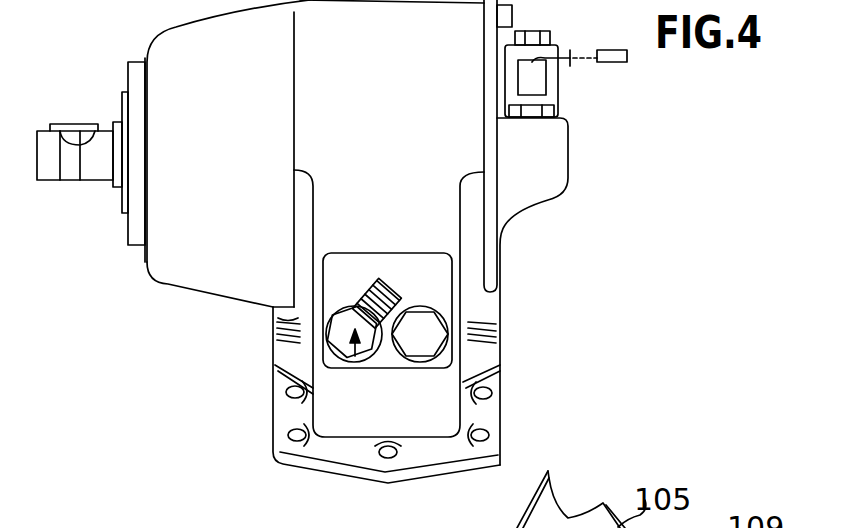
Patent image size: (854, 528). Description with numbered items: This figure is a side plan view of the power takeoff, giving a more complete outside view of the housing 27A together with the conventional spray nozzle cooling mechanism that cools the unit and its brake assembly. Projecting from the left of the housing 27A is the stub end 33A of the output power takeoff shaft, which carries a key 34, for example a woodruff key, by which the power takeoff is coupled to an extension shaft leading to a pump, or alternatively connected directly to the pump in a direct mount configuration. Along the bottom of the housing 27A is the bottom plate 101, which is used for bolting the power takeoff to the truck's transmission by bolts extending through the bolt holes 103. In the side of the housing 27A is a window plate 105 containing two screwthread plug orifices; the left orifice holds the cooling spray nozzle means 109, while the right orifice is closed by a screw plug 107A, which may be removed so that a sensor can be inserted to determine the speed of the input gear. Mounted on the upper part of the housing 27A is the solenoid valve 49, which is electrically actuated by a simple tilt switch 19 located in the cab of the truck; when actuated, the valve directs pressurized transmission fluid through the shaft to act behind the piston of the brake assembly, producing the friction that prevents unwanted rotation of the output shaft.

The tilt switch 19 is at (628, 62).
The housing 27A is at (420, 112).
The stub end 33A is at (50, 168).
The key 34 is at (73, 125).
The solenoid valve 49 is at (553, 93).
The bottom plate 101 is at (490, 413).
The bolt holes 103 is at (293, 393).
The window plate 105 is at (355, 262).
The screw plug 107A is at (435, 330).
The cooling spray nozzle means 109 is at (352, 362).